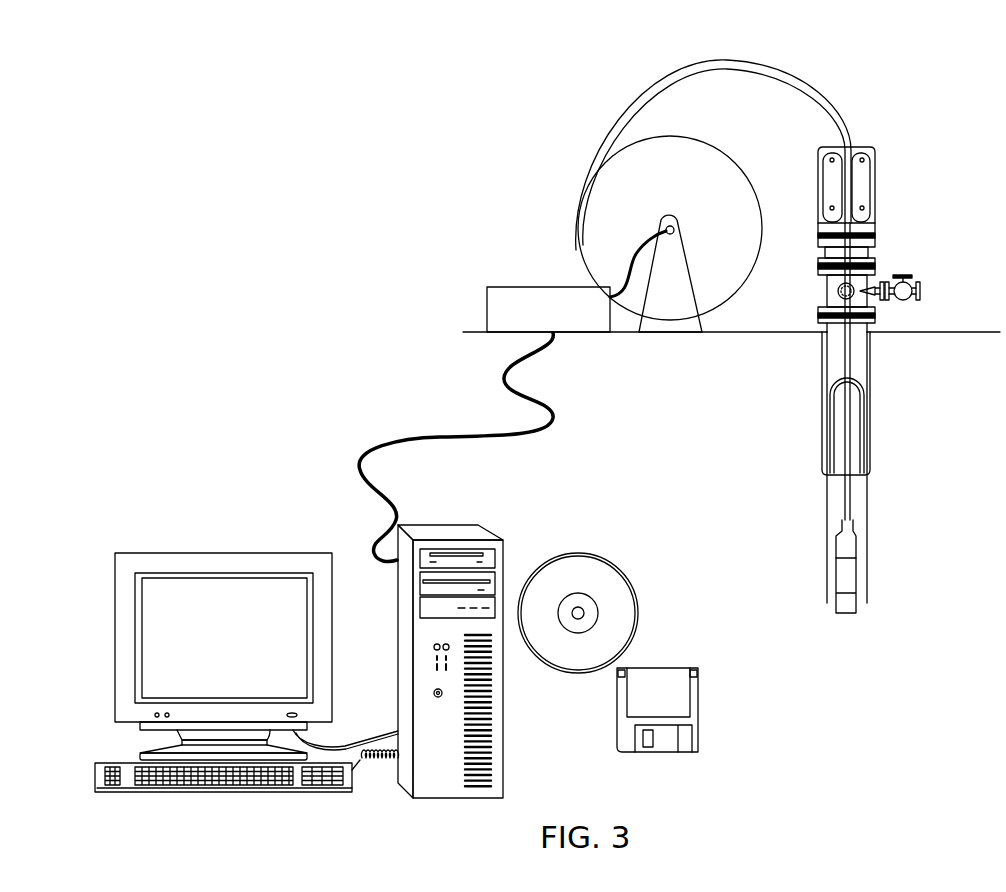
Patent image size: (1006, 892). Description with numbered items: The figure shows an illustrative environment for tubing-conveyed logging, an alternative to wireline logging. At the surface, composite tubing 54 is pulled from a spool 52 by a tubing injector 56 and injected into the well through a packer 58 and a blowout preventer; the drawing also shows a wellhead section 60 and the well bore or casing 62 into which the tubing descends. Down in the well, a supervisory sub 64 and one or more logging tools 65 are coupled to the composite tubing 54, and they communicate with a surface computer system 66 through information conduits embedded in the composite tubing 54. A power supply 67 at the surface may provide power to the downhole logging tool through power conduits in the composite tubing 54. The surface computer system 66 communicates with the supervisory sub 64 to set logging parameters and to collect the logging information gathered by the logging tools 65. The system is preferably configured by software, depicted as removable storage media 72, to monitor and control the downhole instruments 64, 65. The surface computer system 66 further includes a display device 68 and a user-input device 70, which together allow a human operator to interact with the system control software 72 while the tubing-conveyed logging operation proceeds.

The spool 52 is at (678, 202).
The composite tubing 54 is at (628, 103).
The tubing injector 56 is at (872, 178).
The packer 58 is at (872, 252).
The wellhead valve 60 is at (823, 289).
The well casing 62 is at (867, 370).
The supervisory sub 64 is at (856, 550).
The logging tools 65 is at (856, 585).
The surface computer system 66 is at (396, 600).
The power supply 67 is at (517, 286).
The display device 68 is at (125, 725).
The user-input device 70 is at (125, 792).
The removable storage media 72 is at (655, 668).